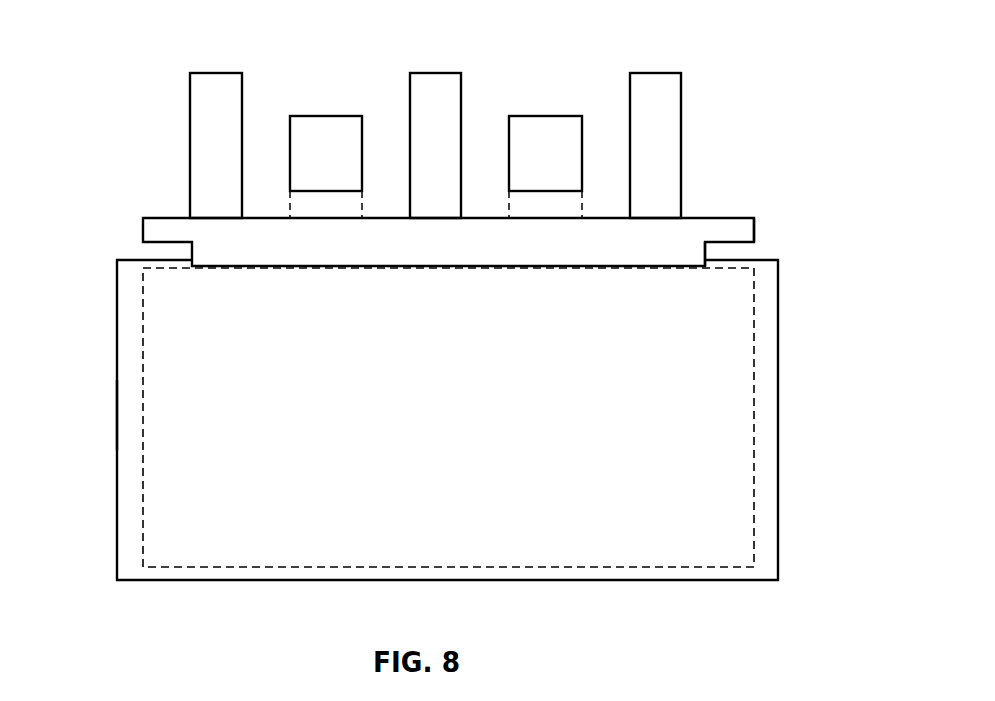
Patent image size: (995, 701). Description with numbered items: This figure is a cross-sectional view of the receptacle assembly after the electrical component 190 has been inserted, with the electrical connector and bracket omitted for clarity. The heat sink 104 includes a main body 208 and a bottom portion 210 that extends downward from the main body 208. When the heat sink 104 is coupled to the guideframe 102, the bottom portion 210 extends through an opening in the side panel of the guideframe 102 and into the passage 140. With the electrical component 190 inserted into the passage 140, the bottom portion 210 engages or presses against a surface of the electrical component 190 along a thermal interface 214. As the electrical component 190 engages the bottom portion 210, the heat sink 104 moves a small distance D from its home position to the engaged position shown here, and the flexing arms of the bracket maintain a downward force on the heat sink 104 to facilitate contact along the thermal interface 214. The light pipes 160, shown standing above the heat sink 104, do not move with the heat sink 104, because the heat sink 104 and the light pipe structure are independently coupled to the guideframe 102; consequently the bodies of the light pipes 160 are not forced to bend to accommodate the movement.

The guideframe 102 is at (779, 420).
The heat sink 104 is at (172, 201).
The passage 140 is at (139, 416).
The light pipes 160 is at (326, 116).
The electrical component 190 is at (143, 498).
The main body 208 is at (760, 242).
The bottom portion 210 is at (720, 242).
The thermal interface 214 is at (707, 277).
The distance D is at (127, 288).